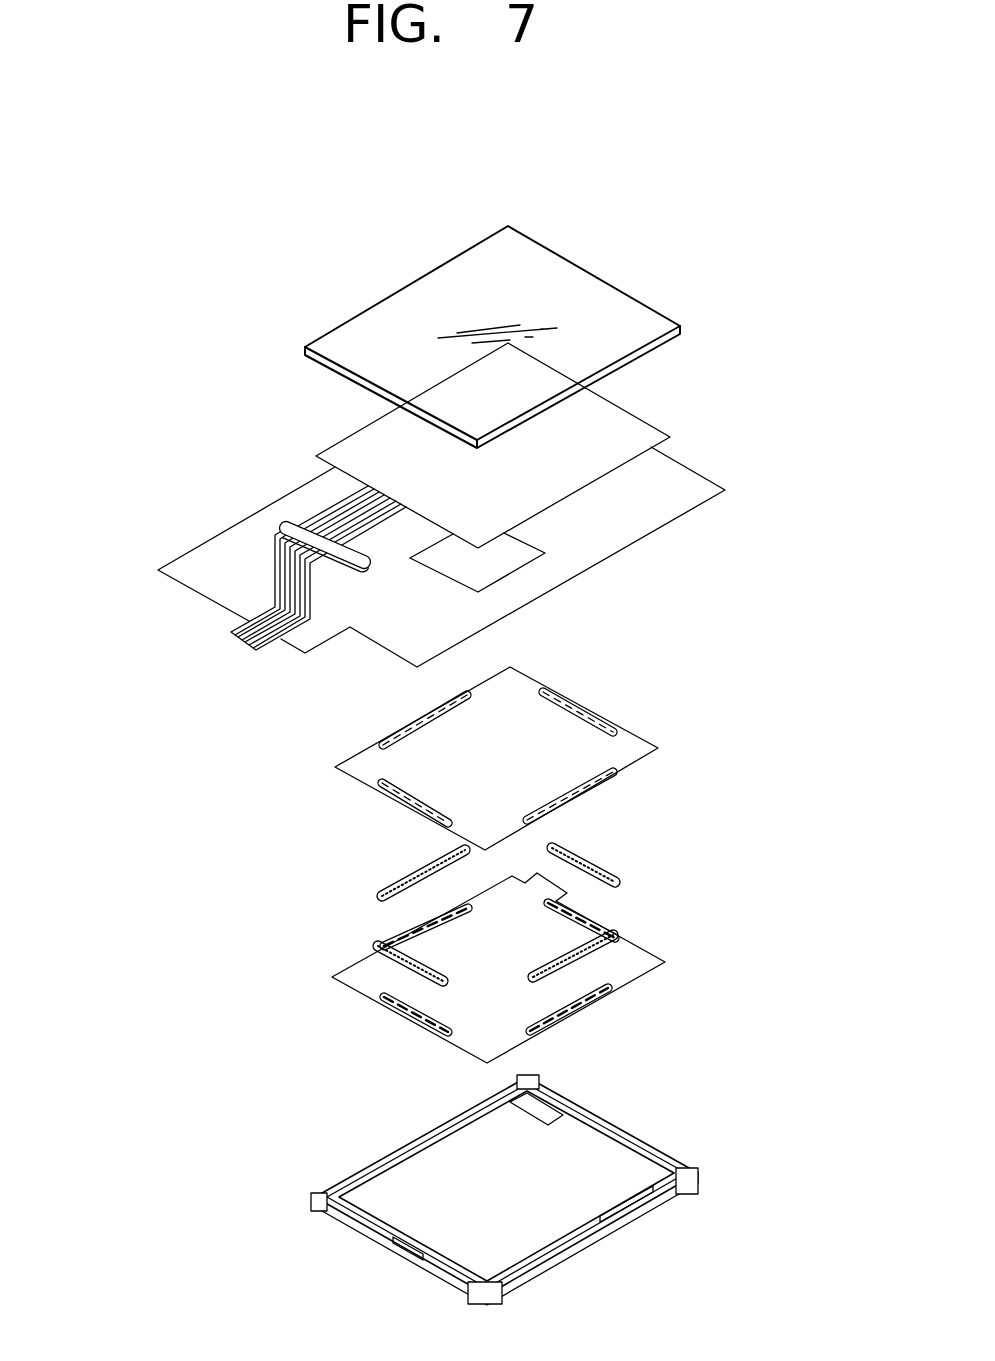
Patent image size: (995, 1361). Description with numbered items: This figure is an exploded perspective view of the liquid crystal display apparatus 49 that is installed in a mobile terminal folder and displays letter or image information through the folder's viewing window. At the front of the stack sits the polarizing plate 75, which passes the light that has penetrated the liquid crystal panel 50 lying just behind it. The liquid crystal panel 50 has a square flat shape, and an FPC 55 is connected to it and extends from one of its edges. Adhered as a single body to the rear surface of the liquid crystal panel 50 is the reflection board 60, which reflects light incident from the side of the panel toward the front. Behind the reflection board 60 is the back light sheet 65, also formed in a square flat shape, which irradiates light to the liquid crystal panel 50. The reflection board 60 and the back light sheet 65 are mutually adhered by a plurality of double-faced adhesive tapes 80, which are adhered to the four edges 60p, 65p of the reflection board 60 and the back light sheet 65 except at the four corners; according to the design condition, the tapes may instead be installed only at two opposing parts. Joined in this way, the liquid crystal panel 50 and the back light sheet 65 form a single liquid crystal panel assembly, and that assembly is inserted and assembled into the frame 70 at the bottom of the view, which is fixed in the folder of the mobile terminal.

The liquid crystal display apparatus 49 is at (170, 300).
The polarizing plate 75 is at (337, 344).
The liquid crystal panel 50 is at (362, 445).
The FPC 55 is at (205, 578).
The reflection board 60 is at (376, 758).
The edges of the reflection board 60p is at (588, 780).
The double-faced adhesive tapes 80 is at (377, 944).
The back light sheet 65 is at (375, 980).
The edges of the back light sheet 65p is at (533, 1021).
The frame 70 is at (365, 1170).